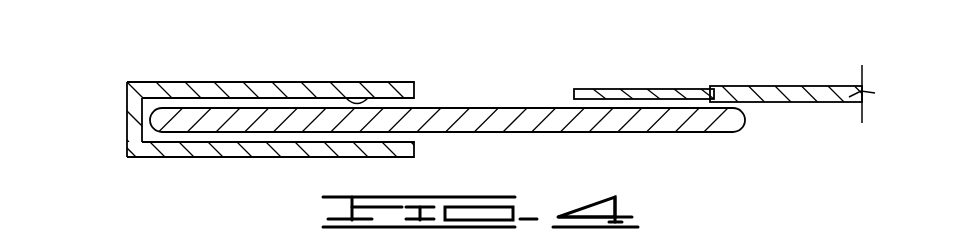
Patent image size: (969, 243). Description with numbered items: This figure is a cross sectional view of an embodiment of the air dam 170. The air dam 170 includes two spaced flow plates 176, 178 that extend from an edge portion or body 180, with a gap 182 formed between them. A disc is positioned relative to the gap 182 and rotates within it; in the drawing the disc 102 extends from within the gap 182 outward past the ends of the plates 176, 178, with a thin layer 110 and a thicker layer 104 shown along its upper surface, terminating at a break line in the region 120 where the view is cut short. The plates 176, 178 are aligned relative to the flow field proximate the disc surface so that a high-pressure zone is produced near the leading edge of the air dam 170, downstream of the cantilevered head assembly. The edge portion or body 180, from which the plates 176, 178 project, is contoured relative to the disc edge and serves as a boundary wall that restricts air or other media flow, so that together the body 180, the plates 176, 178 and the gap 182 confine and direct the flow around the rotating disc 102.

The air dam 170 is at (255, 107).
The flow plate 176 is at (293, 81).
The flow plate 178 is at (190, 158).
The edge portion or body 180 is at (127, 118).
The gap 182 is at (363, 99).
The substrate strip 102 is at (674, 131).
The thin layer 110 is at (582, 90).
The layer 104 is at (727, 78).
The edge region 120 is at (818, 86).